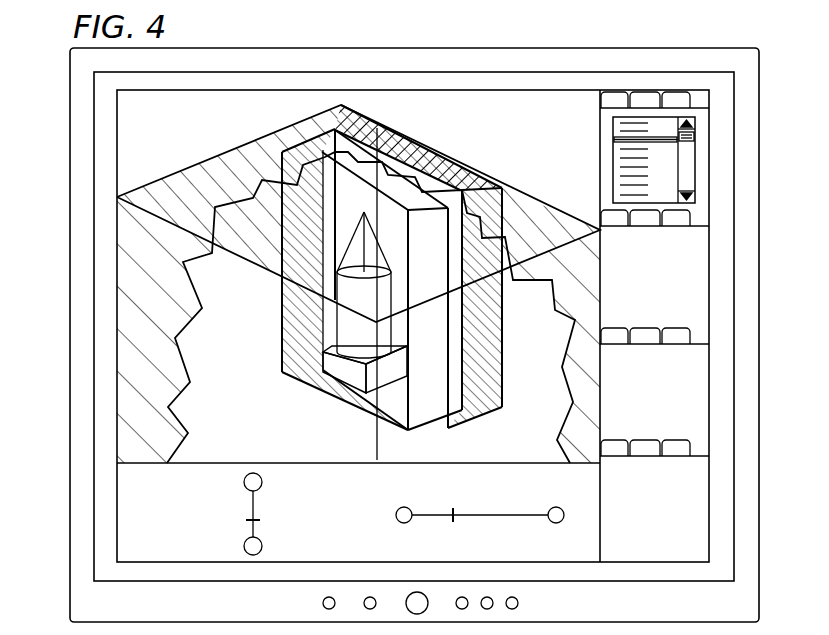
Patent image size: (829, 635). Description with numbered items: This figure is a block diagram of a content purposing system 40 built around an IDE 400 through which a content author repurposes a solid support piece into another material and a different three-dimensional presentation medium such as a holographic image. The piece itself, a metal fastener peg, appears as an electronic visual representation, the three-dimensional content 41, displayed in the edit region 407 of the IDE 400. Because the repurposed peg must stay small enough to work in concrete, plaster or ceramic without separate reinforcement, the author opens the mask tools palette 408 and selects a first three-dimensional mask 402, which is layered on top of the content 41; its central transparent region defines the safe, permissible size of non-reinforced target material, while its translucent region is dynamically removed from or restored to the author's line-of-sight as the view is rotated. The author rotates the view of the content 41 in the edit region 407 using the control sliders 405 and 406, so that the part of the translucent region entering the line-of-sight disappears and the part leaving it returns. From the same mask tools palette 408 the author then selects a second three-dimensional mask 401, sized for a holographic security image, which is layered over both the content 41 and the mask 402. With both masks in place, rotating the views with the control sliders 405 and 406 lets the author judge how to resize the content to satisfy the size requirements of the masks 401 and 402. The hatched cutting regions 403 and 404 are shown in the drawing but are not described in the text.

The content purposing system 40 is at (694, 30).
The IDE 400 is at (470, 90).
The 3D mask 401 is at (455, 154).
The 3D mask 402 is at (465, 325).
The horizontal cutting plane 403 is at (253, 140).
The vertical cutting plane 404 is at (117, 268).
The control slider 405 is at (271, 514).
The control slider 406 is at (480, 525).
The edit region 407 is at (590, 121).
The mask tools palette 408 is at (697, 153).
The 3D content 41 is at (328, 203).